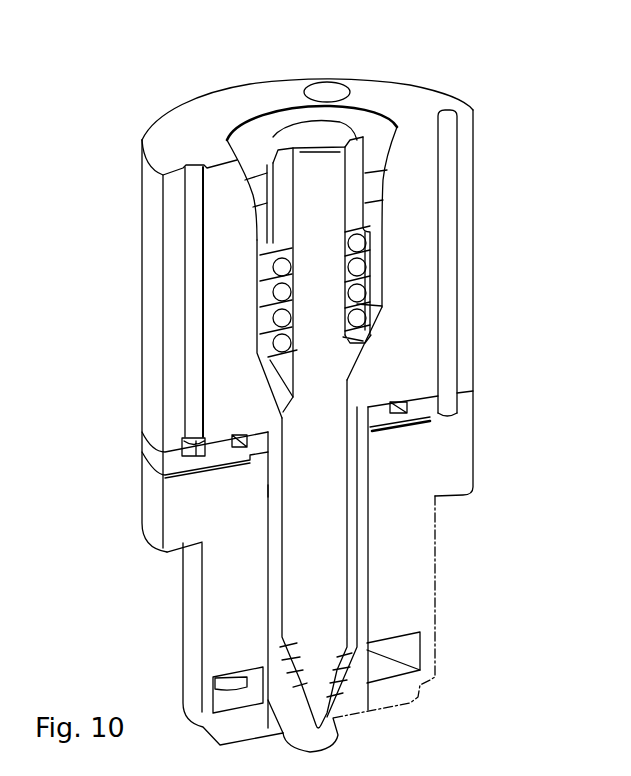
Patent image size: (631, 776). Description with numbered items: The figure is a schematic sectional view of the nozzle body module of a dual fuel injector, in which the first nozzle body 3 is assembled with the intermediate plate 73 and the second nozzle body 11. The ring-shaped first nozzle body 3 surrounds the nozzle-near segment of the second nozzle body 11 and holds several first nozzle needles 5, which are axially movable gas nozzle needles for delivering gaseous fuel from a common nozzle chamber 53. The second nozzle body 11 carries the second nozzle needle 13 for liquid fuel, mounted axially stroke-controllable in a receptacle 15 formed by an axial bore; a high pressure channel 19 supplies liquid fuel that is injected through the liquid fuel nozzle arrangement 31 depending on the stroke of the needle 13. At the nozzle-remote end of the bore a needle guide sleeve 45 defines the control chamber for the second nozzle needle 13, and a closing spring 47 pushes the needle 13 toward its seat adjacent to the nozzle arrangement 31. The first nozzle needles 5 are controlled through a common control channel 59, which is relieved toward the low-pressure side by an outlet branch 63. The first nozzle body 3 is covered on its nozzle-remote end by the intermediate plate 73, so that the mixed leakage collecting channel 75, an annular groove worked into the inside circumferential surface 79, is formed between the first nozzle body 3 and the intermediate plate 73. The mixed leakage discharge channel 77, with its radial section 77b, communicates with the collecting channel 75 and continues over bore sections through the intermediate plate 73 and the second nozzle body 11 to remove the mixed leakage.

The first nozzle body 3 is at (413, 528).
The first nozzle needle 5 is at (222, 679).
The second nozzle body 11 is at (180, 123).
The second nozzle needle 13 is at (316, 554).
The receptacle 15 is at (283, 122).
The high pressure channel 19 is at (326, 86).
The liquid fuel nozzle arrangement 31 is at (350, 732).
The needle guide sleeve 45 is at (284, 172).
The closing spring 47 is at (363, 293).
The nozzle chamber 53 is at (368, 655).
The control channel 59 is at (238, 435).
The outlet branch 63 is at (190, 325).
The intermediate plate 73 is at (142, 449).
The mixed leakage collecting channel 75 is at (180, 482).
The mixed leakage discharge channel 77 is at (455, 213).
The radial section of mixed leakage discharge channel 77b is at (433, 423).
The inside circumferential surface 79 is at (270, 497).